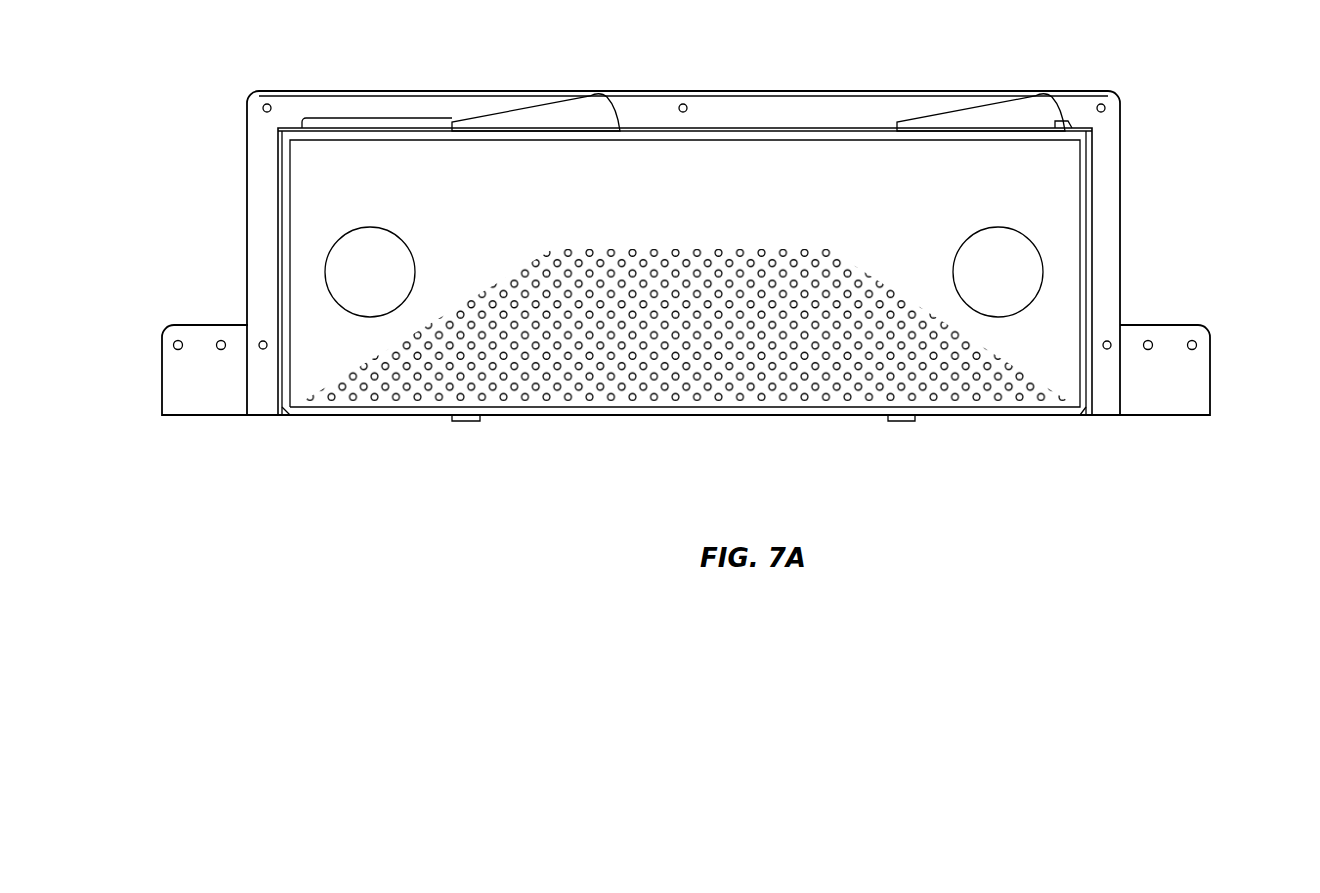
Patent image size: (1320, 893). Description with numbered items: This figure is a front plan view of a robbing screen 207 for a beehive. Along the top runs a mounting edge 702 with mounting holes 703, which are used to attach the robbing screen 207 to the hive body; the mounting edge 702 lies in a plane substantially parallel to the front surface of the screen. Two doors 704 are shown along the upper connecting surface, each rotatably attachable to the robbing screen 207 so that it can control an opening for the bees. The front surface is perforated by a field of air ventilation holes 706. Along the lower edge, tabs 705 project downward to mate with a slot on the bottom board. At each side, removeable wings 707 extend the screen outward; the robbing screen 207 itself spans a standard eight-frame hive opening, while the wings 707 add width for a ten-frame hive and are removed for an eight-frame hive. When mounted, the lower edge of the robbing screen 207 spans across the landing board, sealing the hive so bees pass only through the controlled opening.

The robbing screen 207 is at (703, 264).
The mounting edge 702 is at (843, 108).
The mounting holes 703 is at (687, 104).
The door 704 is at (568, 110).
The tabs 705 is at (466, 420).
The air ventilation holes 706 is at (662, 340).
The removeable wings 707 is at (195, 378).